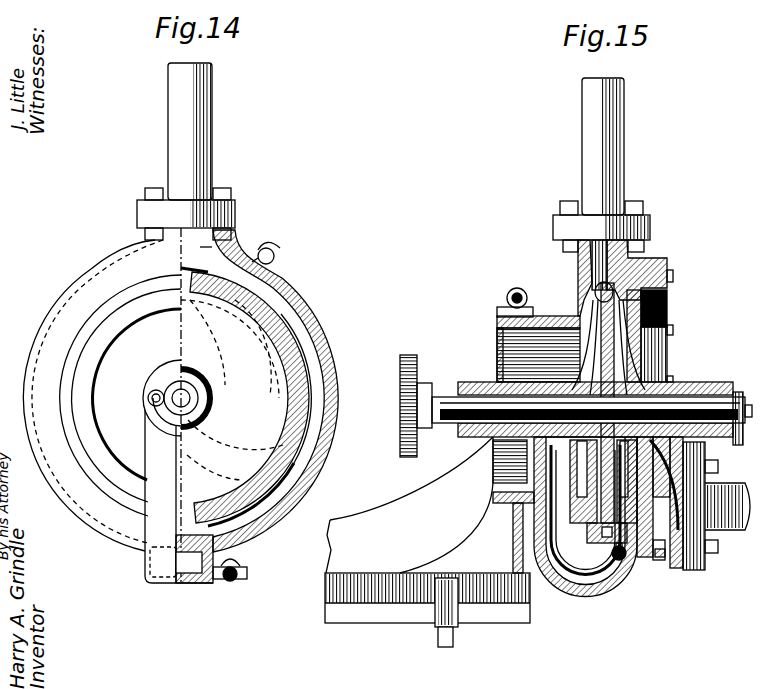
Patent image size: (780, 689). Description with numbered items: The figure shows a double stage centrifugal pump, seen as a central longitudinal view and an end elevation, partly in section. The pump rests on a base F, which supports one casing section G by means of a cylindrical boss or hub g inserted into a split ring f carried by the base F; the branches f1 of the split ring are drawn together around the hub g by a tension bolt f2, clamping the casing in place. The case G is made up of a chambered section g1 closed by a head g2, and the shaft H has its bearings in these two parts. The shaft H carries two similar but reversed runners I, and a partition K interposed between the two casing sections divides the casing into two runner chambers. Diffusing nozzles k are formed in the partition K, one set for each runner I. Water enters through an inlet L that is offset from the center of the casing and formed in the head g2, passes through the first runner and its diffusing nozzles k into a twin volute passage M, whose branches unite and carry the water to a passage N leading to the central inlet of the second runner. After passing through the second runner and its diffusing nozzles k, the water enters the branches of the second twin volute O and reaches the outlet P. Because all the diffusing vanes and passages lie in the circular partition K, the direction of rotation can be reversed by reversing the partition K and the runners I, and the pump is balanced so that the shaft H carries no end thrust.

In FIG. 14, the casing section G is at (160, 292).
In FIG. 15, the casing section G is at (582, 317).
In FIG. 14, the cylindrical boss or hub g is at (97, 388).
In FIG. 15, the cylindrical boss or hub g is at (558, 328).
In FIG. 15, the chambered section g1 is at (560, 515).
In FIG. 15, the head g2 is at (665, 368).
In FIG. 14, the shaft H is at (173, 401).
In FIG. 15, the shaft H is at (700, 415).
In FIG. 14, the runners I is at (258, 373).
In FIG. 15, the runners I is at (660, 350).
In FIG. 14, the partition K is at (312, 400).
In FIG. 15, the partition K is at (667, 308).
In FIG. 14, the diffusing nozzles k is at (228, 277).
In FIG. 15, the diffusing nozzles k is at (667, 287).
In FIG. 14, the second twin volute O is at (267, 505).
In FIG. 15, the second twin volute O is at (583, 267).
In FIG. 14, the outlet P is at (200, 247).
In FIG. 15, the outlet P is at (563, 247).
In FIG. 15, the split ring f is at (493, 503).
In FIG. 15, the branches of the split ring f1 is at (503, 313).
In FIG. 15, the tension bolt f2 is at (513, 297).
In FIG. 15, the base F is at (493, 623).
In FIG. 15, the inlet L is at (720, 537).
In FIG. 15, the twin volute passage M is at (637, 567).
In FIG. 15, the passage N is at (610, 570).